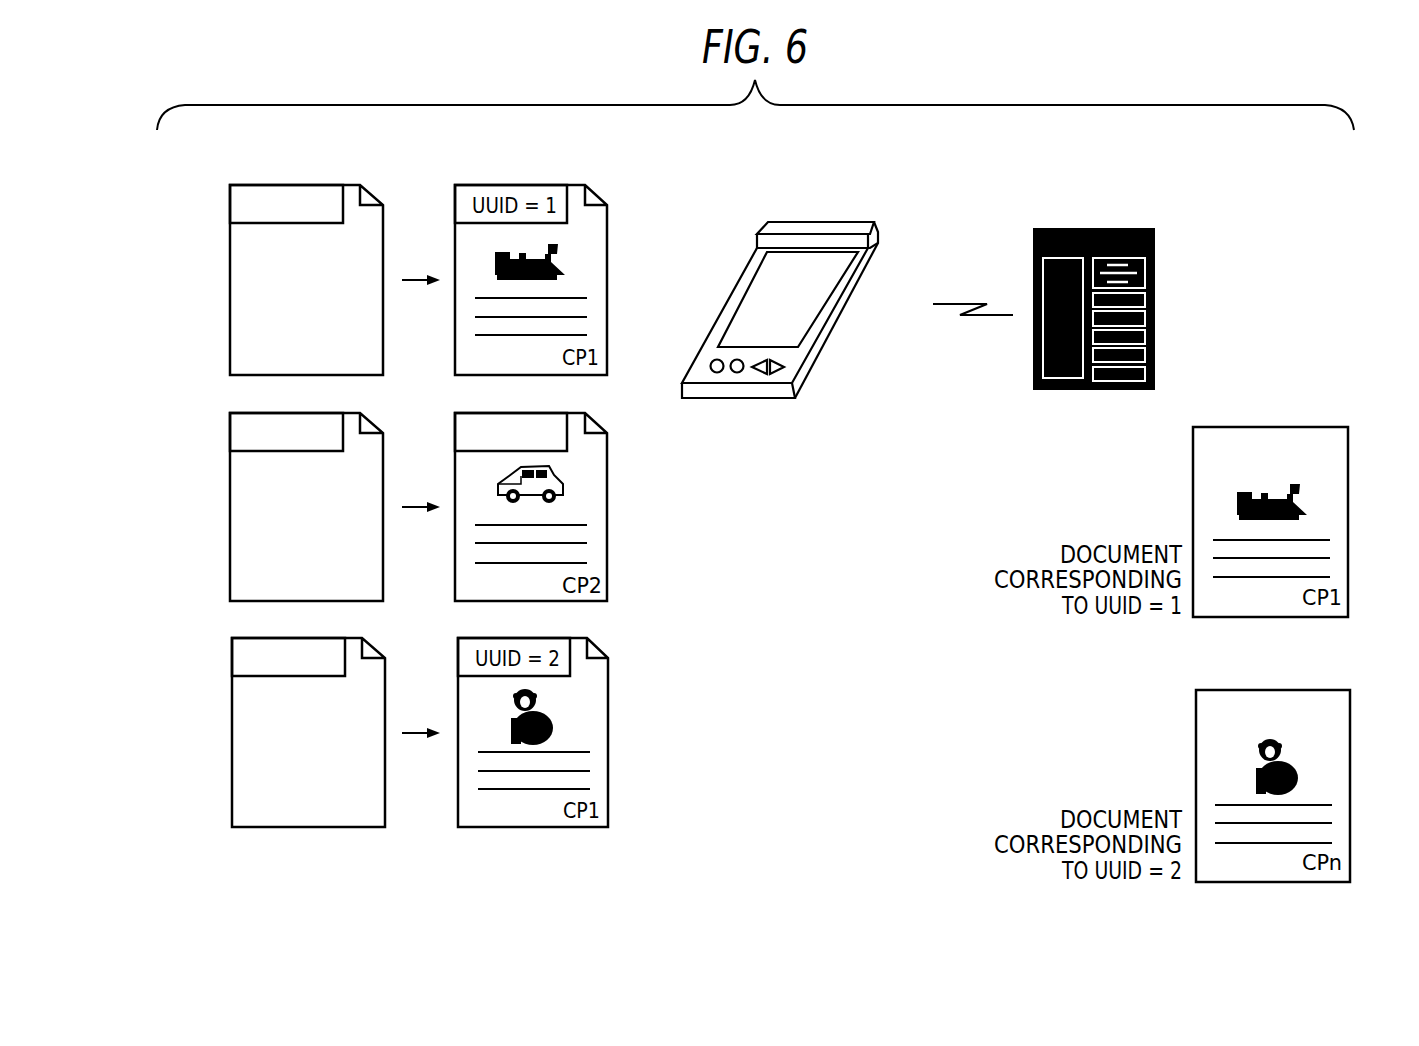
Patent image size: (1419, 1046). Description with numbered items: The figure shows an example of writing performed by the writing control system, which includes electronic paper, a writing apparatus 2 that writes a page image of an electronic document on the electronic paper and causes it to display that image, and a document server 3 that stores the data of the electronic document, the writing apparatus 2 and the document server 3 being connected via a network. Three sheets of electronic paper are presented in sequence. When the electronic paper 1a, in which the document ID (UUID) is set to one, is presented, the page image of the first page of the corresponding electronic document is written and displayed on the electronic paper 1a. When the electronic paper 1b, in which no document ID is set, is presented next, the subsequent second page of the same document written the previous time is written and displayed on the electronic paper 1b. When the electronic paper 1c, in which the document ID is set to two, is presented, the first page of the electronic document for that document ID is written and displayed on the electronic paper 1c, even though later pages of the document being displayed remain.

The electronic paper 1a is at (230, 285).
The electronic paper 1b is at (230, 508).
The electronic paper 1c is at (231, 736).
The writing apparatus 2 is at (821, 222).
The document server 3 is at (1097, 228).